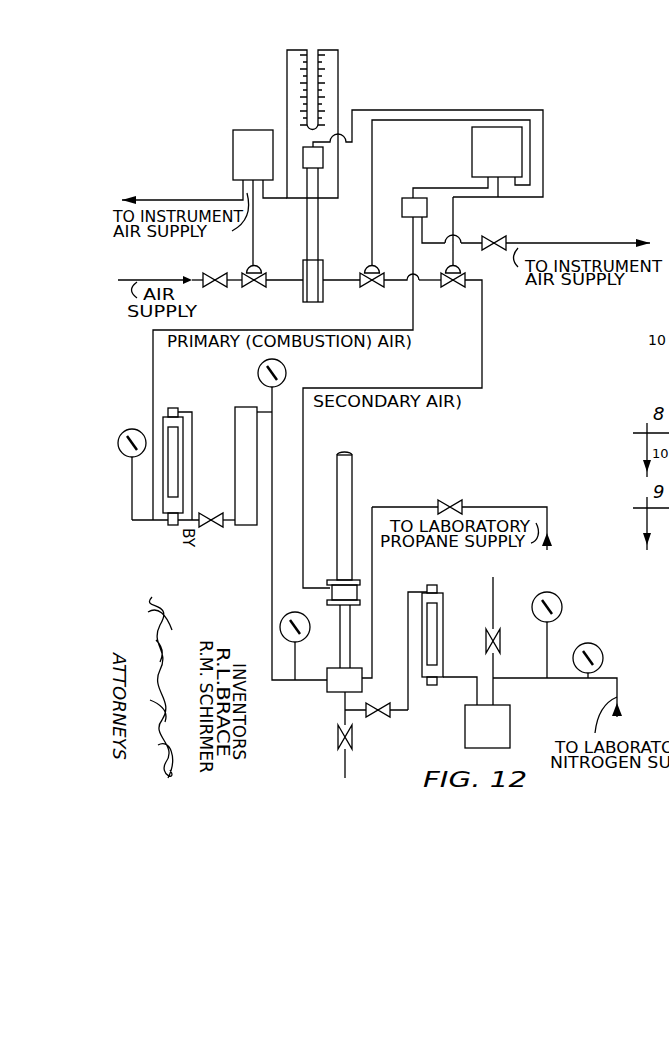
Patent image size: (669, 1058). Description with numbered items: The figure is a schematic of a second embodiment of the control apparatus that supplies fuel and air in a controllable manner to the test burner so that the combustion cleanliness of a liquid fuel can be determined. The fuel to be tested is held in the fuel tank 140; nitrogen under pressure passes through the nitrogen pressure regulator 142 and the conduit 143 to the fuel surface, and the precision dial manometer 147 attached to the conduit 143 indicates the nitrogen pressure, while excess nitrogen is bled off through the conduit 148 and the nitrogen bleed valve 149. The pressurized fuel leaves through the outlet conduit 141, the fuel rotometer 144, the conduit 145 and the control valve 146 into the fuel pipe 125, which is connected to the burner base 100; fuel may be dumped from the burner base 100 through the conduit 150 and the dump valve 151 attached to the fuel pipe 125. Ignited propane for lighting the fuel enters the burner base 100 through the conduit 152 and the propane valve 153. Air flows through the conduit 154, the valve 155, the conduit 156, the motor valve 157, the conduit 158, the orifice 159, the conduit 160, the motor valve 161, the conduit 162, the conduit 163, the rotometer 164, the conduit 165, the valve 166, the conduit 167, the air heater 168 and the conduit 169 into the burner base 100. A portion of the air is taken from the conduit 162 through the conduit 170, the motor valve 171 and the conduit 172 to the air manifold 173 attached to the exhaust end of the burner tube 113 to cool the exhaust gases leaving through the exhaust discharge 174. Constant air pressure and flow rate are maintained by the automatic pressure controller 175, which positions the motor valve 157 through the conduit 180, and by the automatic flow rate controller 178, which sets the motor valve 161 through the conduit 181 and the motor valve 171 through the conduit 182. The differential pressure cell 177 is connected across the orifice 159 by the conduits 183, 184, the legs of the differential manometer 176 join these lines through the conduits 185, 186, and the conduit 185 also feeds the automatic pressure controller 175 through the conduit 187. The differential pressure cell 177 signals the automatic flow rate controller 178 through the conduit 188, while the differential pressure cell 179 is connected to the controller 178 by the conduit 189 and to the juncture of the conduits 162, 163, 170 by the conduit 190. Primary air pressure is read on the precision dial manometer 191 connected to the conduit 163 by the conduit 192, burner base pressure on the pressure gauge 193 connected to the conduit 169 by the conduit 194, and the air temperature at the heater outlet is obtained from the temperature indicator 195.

The burner base 100 is at (325, 688).
The burner tube 113 is at (350, 623).
The fuel pipe 125 is at (338, 717).
The fuel tank 140 is at (512, 720).
The outlet conduit 141 is at (455, 675).
The nitrogen pressure regulator 142 is at (587, 644).
The conduit 143 is at (528, 680).
The fuel rotometer 144 is at (444, 602).
The conduit 145 is at (408, 590).
The control valve 146 is at (390, 714).
The precision dial manometer 147 is at (553, 597).
The conduit 148 is at (497, 667).
The nitrogen bleed valve 149 is at (498, 637).
The conduit 150 is at (352, 763).
The dump valve 151 is at (336, 742).
The conduit 152 is at (522, 505).
The propane valve 153 is at (455, 502).
The conduit 154 is at (130, 275).
The valve 155 is at (203, 273).
The conduit 156 is at (238, 275).
The motor valve 157 is at (247, 288).
The conduit 158 is at (285, 287).
The orifice 159 is at (310, 308).
The conduit 160 is at (337, 273).
The motor valve 161 is at (367, 288).
The conduit 162 is at (405, 285).
The conduit 163 is at (415, 317).
The rotometer 164 is at (163, 417).
The conduit 165 is at (194, 423).
The valve 166 is at (204, 510).
The conduit 167 is at (228, 522).
The air heater 168 is at (243, 407).
The conduit 169 is at (270, 578).
The conduit 170 is at (437, 285).
The motor valve 171 is at (461, 272).
The conduit 172 is at (484, 297).
The air manifold 173 is at (326, 580).
The exhaust discharge 174 is at (353, 480).
The automatic pressure controller 175 is at (245, 158).
The differential manometer 176 is at (297, 70).
The differential pressure cell 177 is at (320, 157).
The automatic flow rate controller 178 is at (487, 140).
The differential pressure cell 179 is at (407, 200).
The conduit 180 is at (253, 227).
The conduit 181 is at (370, 227).
The conduit 182 is at (455, 215).
The conduit 183 is at (306, 243).
The conduit 184 is at (318, 227).
The conduit 185 is at (293, 95).
The conduit 186 is at (338, 73).
The conduit 187 is at (277, 198).
The conduit 188 is at (450, 110).
The conduit 189 is at (443, 185).
The conduit 190 is at (418, 238).
The precision dial manometer 191 is at (132, 429).
The conduit 192 is at (150, 522).
The pressure gauge 193 is at (306, 614).
The conduit 194 is at (273, 405).
The temperature indicator 195 is at (287, 362).